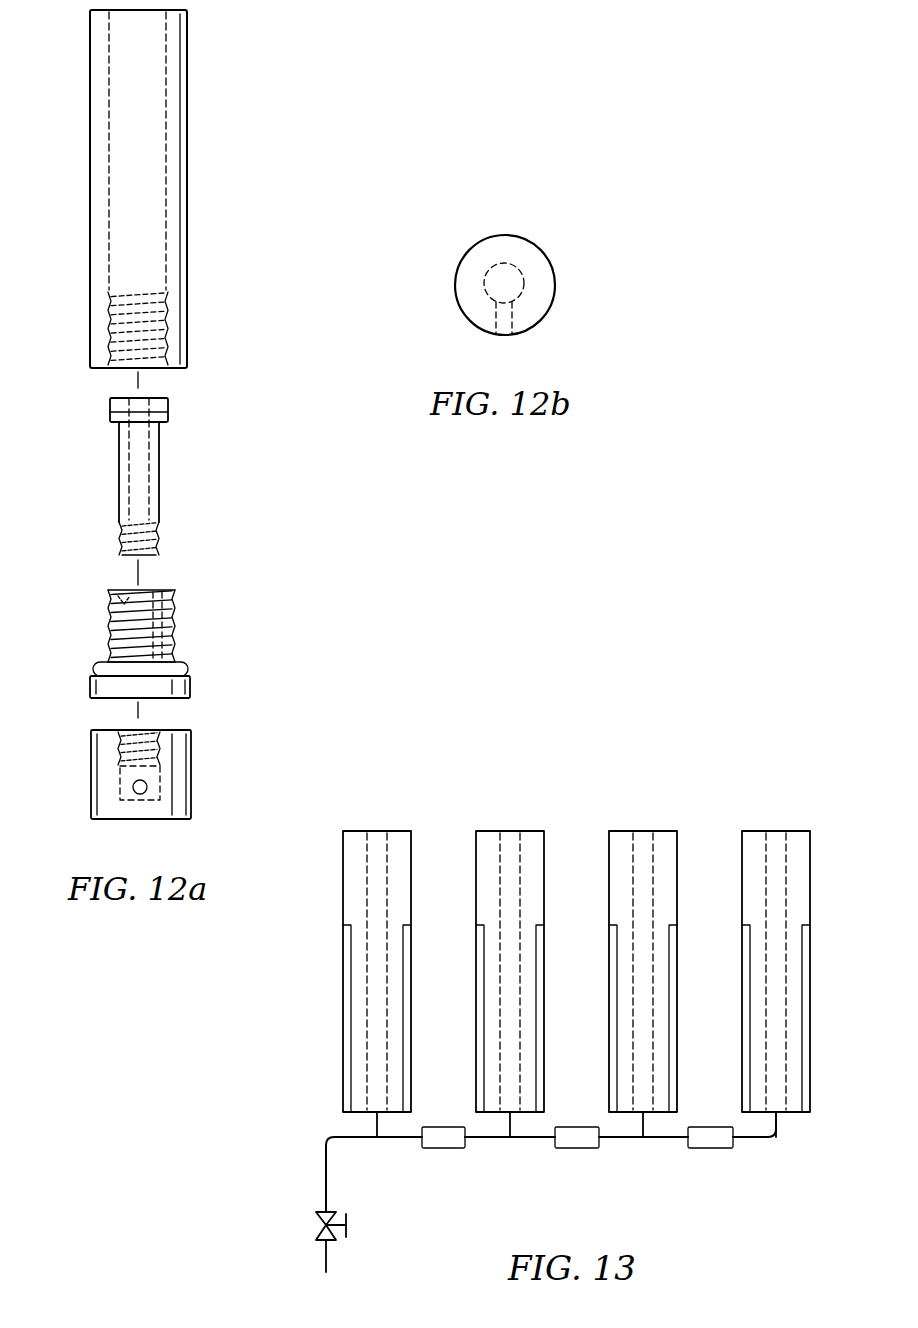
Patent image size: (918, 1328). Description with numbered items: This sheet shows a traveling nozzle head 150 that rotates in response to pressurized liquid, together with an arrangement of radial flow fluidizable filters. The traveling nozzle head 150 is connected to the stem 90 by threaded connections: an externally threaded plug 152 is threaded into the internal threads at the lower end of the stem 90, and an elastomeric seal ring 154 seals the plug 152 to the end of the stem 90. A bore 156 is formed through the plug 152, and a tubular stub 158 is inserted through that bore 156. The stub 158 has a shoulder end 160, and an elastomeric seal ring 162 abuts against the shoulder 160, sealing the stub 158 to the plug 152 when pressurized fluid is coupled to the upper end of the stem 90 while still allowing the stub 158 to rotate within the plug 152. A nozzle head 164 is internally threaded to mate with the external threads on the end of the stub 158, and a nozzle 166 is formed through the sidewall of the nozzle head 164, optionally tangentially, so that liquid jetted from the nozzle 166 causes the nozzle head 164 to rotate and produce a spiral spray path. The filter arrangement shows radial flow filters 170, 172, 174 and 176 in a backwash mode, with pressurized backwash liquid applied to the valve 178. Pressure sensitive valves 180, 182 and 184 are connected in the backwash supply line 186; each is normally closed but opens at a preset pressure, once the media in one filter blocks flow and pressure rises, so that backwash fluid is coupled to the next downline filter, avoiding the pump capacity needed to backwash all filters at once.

In FIG. 12A, the stem 90 is at (90, 98).
In FIG. 12A, the traveling nozzle head 150 is at (217, 200).
In FIG. 12A, the externally threaded plug 152 is at (108, 624).
In FIG. 12A, the elastomeric seal ring 154 is at (94, 672).
In FIG. 12A, the bore 156 is at (128, 588).
In FIG. 12A, the tubular stub 158 is at (119, 478).
In FIG. 12A, the shoulder end 160 is at (110, 405).
In FIG. 12A, the elastomeric seal ring 162 is at (110, 418).
In FIG. 12A, the nozzle head 164 is at (91, 775).
In FIG. 12B, the nozzle head 164 is at (456, 287).
In FIG. 12A, the nozzle 166 is at (144, 796).
In FIG. 12B, the nozzle 166 is at (518, 318).
In FIG. 13, the radial flow filter 170 is at (377, 831).
In FIG. 13, the radial flow filter 172 is at (510, 831).
In FIG. 13, the radial flow filter 174 is at (643, 831).
In FIG. 13, the radial flow filter 176 is at (776, 831).
In FIG. 13, the valve 178 is at (316, 1222).
In FIG. 13, the pressure sensitive valve 180 is at (442, 1150).
In FIG. 13, the pressure sensitive valve 182 is at (575, 1150).
In FIG. 13, the pressure sensitive valve 184 is at (712, 1150).
In FIG. 13, the backwash supply line 186 is at (326, 1164).